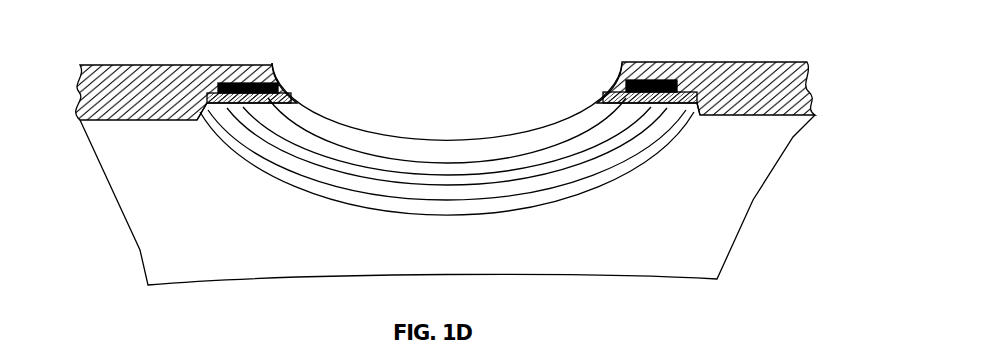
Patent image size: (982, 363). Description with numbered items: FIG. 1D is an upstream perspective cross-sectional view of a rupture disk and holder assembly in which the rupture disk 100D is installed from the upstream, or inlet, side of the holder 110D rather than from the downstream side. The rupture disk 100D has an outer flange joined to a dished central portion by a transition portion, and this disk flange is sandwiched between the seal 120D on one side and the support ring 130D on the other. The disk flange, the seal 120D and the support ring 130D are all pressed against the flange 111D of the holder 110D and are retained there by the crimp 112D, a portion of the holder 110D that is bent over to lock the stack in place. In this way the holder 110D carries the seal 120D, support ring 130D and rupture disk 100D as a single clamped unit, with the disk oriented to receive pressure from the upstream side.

The rupture disk 100D is at (438, 142).
The holder 110D is at (127, 187).
The flange of holder 111D is at (236, 81).
The crimp 112D is at (205, 109).
The seal 120D is at (259, 64).
The support ring 130D is at (653, 83).